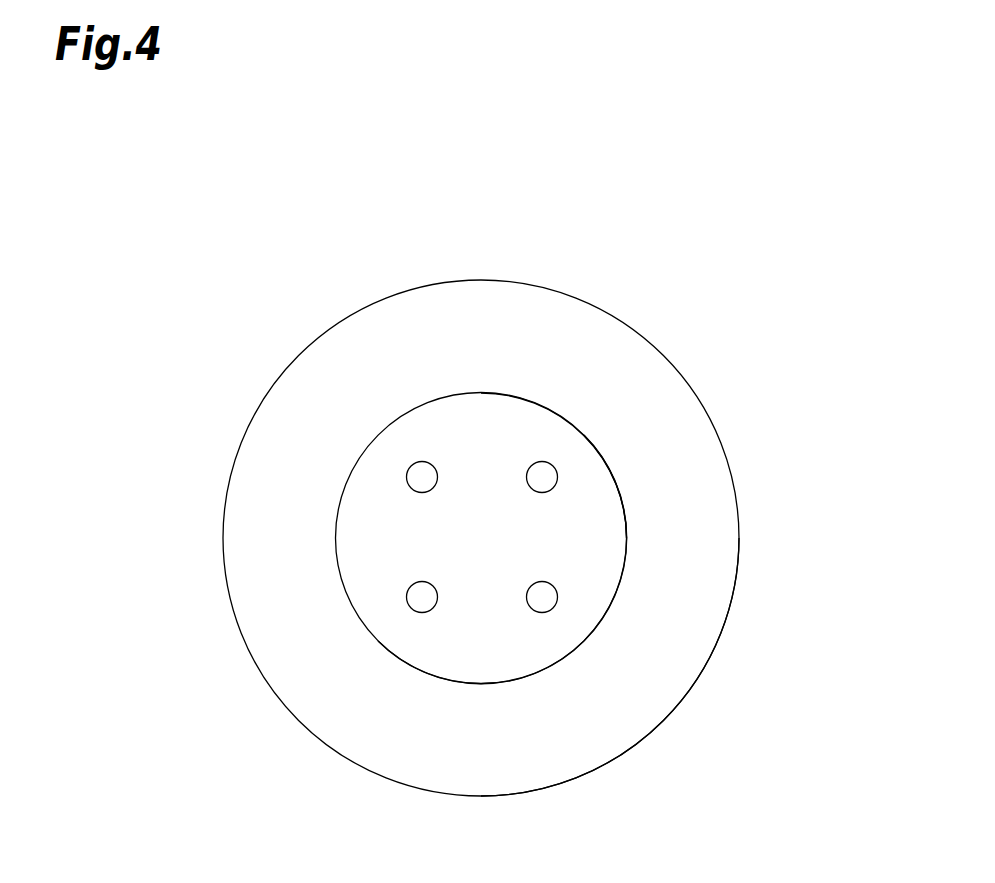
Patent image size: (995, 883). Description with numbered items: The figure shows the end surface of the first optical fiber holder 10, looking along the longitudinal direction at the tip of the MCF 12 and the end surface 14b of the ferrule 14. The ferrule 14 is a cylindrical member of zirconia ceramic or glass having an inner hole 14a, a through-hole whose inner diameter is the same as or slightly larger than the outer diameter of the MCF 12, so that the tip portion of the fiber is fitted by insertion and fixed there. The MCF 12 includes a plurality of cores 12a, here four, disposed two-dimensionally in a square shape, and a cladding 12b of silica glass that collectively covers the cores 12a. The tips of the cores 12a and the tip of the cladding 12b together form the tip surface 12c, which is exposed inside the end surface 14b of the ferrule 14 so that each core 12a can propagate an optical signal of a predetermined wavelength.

The first optical fiber holder 10 is at (743, 204).
The MCF 12 is at (483, 392).
The cores 12a is at (408, 465).
The cladding 12b is at (482, 652).
The tip surface 12c is at (590, 563).
The ferrule 14 is at (707, 410).
The inner hole 14a is at (615, 478).
The end surface 14b is at (713, 532).